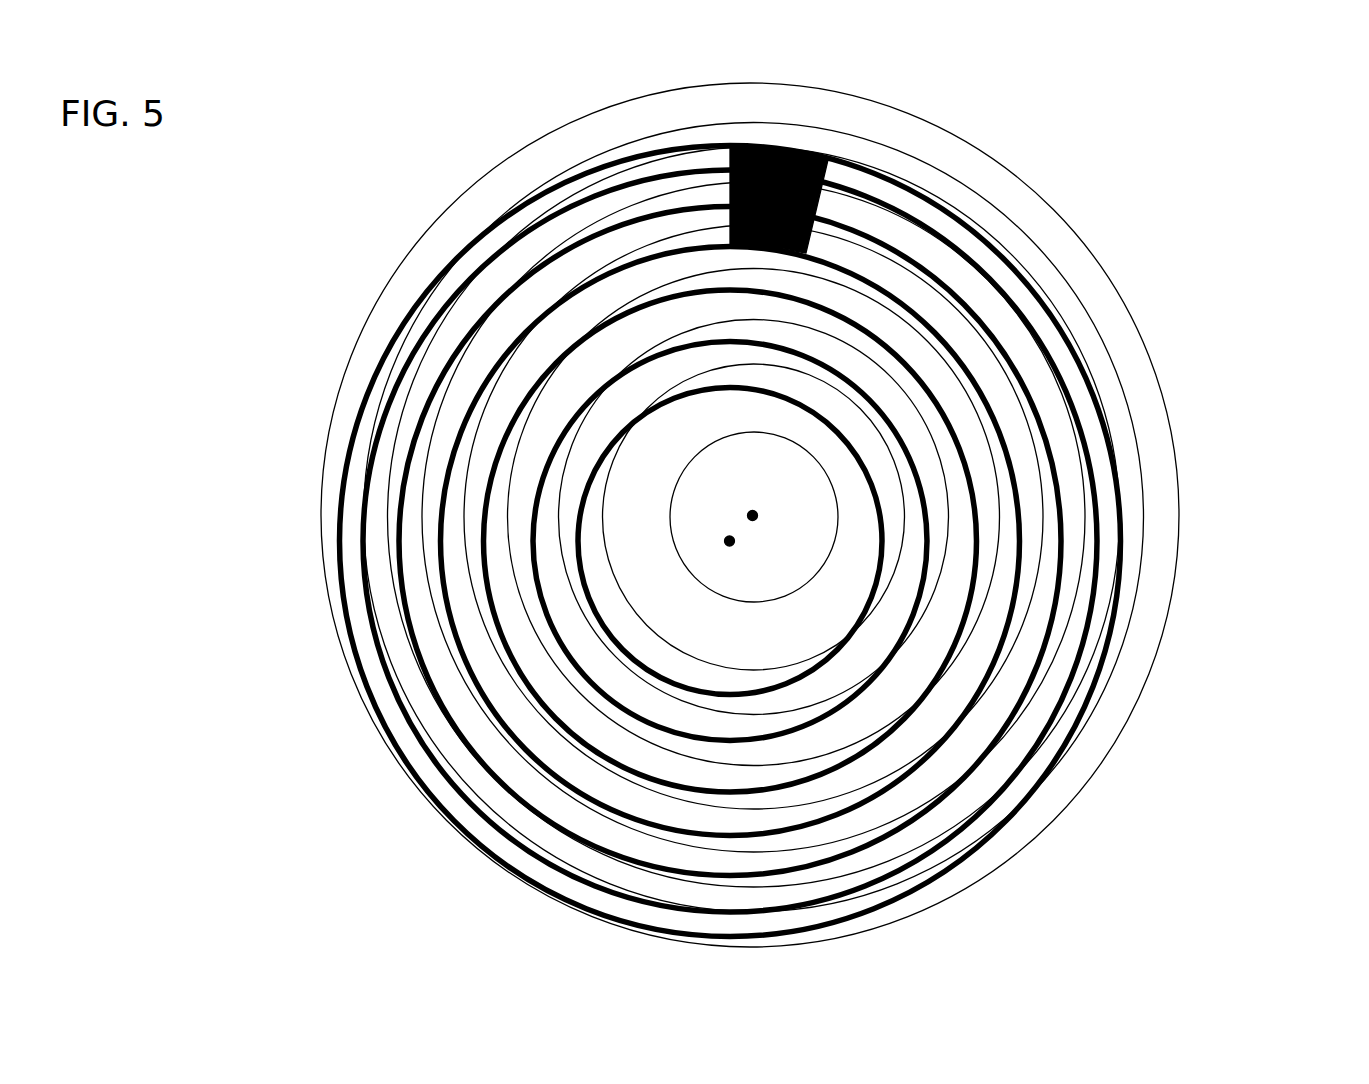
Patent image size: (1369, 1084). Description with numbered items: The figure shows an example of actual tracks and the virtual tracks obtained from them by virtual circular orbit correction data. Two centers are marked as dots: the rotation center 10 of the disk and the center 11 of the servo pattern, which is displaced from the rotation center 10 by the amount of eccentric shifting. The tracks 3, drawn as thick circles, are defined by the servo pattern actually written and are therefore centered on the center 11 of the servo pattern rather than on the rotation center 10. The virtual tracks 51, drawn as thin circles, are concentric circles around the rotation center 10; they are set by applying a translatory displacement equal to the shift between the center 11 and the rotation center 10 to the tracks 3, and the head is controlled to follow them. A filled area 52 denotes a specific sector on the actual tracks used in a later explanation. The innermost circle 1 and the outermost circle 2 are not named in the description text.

The disk substrate center region 1 is at (715, 592).
The disk outer periphery 2 is at (997, 159).
The tracks 3 is at (600, 450).
The rotation center 10 is at (729, 541).
The center of the servo pattern 11 is at (752, 515).
The virtual tracks 51 is at (893, 445).
The area 52 is at (787, 145).